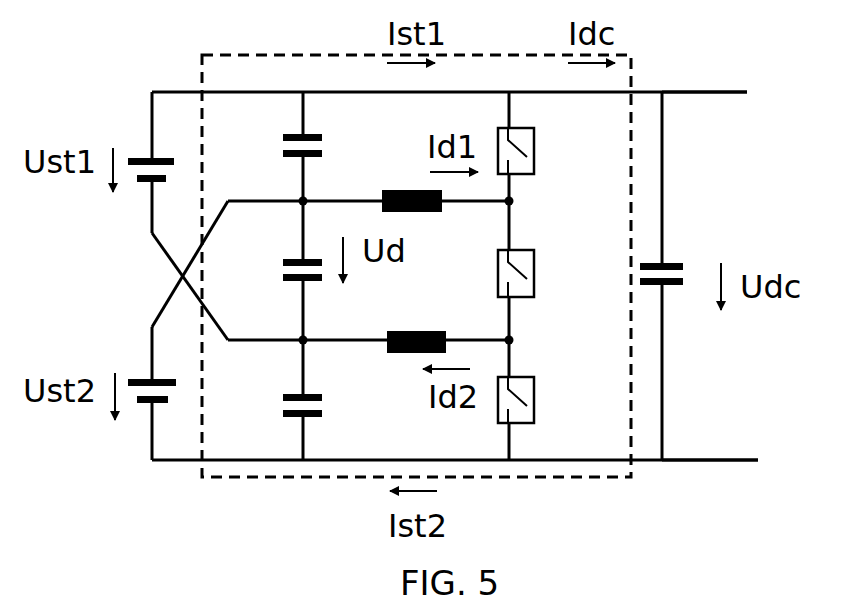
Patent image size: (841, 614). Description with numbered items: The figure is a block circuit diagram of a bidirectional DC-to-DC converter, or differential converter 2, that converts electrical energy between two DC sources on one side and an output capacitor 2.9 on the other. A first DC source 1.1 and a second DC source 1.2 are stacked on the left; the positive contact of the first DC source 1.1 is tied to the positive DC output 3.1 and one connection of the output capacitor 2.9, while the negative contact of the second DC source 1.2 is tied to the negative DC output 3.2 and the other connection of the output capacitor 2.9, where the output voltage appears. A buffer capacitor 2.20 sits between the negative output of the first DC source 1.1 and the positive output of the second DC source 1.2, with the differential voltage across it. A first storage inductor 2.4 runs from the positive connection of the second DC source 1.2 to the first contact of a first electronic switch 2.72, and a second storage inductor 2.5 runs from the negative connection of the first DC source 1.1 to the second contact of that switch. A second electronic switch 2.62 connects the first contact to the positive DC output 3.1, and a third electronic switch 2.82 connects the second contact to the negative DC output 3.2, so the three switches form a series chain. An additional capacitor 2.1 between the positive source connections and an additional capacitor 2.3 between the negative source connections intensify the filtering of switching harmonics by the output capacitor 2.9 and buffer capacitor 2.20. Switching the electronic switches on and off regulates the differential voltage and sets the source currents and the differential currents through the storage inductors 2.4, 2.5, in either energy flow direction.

The converter / DC-DC converter unit 2 is at (402, 239).
The first DC source 1.1 is at (129, 137).
The second DC source 1.2 is at (130, 356).
The additional capacitor 2.1 is at (271, 128).
The buffer capacitor 2.20 is at (268, 253).
The additional capacitor 2.3 is at (273, 408).
The first storage inductor 2.4 is at (401, 174).
The second storage inductor 2.5 is at (407, 312).
The second electronic switch 2.62 is at (560, 136).
The first electronic switch 2.72 is at (560, 247).
The third electronic switch 2.82 is at (559, 377).
The output capacitor 2.9 is at (701, 248).
The positive DC output 3.1 is at (704, 116).
The negative DC output 3.2 is at (710, 429).